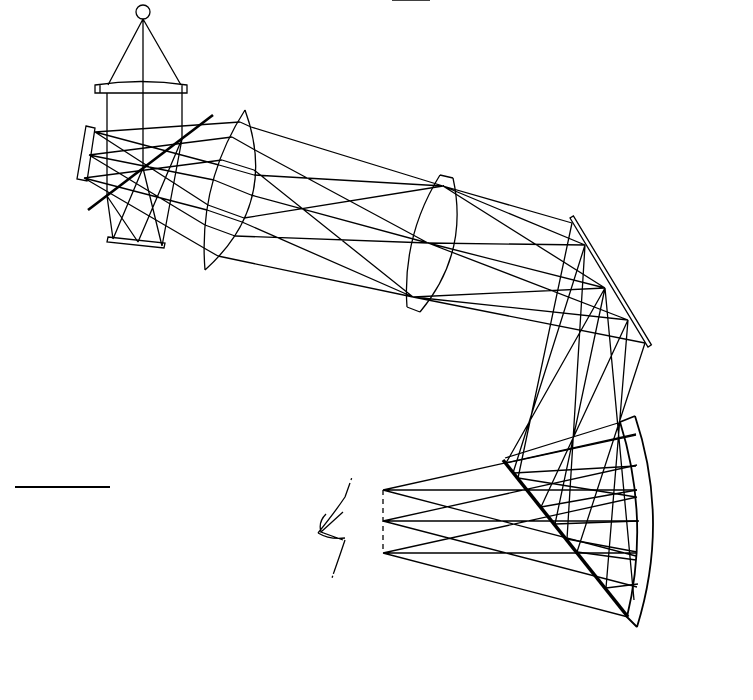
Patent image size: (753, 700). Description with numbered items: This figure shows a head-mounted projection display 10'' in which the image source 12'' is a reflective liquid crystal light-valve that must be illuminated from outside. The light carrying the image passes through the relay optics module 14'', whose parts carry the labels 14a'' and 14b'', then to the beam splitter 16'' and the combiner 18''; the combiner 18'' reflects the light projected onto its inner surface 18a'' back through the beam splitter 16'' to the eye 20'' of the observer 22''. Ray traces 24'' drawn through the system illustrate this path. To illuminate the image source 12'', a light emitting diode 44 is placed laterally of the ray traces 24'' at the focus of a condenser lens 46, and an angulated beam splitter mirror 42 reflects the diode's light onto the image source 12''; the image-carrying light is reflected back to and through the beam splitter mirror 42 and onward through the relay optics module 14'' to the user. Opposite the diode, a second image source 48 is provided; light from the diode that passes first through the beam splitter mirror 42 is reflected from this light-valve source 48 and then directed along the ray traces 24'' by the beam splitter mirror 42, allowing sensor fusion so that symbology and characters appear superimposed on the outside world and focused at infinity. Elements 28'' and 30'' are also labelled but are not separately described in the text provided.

The projection display 10'' is at (369, 313).
The image source 12'' is at (56, 160).
The relay optics module 14'' is at (369, 201).
The first relay lens 14a'' is at (266, 180).
The second relay lens 14b'' is at (470, 231).
The beam splitter 16'' is at (530, 527).
The combiner 18'' is at (671, 521).
The inner surface 18a'' is at (671, 519).
The eye 20'' is at (341, 482).
The observer 22'' is at (372, 573).
The ray traces 24'' is at (330, 207).
The housing 28'' is at (413, 6).
The fold mirror 30'' is at (614, 281).
The beam splitter mirror 42 is at (98, 210).
The light emitting diode 44 is at (136, 12).
The condenser lens 46 is at (184, 86).
The second image source 48 is at (118, 249).